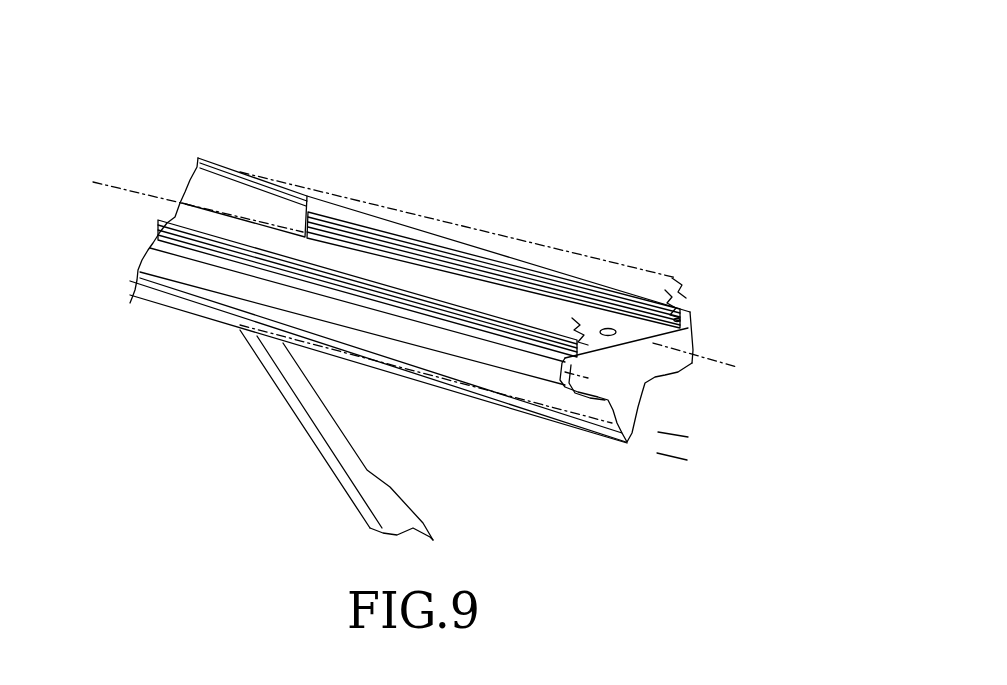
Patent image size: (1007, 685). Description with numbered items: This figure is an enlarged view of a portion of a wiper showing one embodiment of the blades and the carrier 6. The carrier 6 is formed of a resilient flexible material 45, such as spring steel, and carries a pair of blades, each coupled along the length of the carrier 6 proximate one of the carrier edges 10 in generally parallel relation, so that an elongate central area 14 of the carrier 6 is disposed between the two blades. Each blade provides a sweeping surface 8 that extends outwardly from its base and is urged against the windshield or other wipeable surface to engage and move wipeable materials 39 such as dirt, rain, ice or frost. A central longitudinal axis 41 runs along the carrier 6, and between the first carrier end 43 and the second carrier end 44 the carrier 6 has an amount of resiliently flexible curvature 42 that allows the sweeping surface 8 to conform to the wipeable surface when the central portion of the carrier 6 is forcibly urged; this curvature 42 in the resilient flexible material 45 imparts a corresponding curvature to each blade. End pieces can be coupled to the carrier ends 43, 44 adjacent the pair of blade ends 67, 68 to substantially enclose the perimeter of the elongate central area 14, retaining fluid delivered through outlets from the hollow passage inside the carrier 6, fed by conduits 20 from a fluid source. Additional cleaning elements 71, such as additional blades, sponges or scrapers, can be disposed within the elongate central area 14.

The carrier 6 is at (750, 332).
The sweeping surface 8 is at (413, 211).
The carrier edge 10 is at (513, 140).
The elongate central area 14 is at (610, 327).
The conduit 20 is at (280, 384).
The wipeable materials 39 is at (640, 360).
The longitudinal axis 41 is at (413, 295).
The resiliently flexible curvature 42 is at (677, 403).
The first carrier end 43 is at (603, 380).
The second carrier end 44 is at (153, 253).
The resilient flexible material 45 is at (673, 297).
The blade end 67 is at (723, 312).
The blade end 68 is at (188, 172).
The additional cleaning elements 71 is at (245, 188).